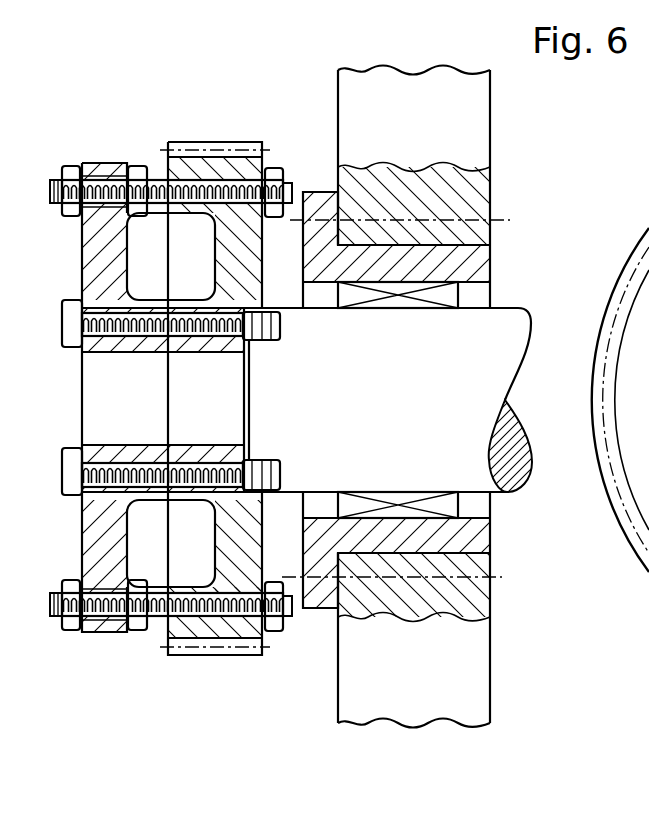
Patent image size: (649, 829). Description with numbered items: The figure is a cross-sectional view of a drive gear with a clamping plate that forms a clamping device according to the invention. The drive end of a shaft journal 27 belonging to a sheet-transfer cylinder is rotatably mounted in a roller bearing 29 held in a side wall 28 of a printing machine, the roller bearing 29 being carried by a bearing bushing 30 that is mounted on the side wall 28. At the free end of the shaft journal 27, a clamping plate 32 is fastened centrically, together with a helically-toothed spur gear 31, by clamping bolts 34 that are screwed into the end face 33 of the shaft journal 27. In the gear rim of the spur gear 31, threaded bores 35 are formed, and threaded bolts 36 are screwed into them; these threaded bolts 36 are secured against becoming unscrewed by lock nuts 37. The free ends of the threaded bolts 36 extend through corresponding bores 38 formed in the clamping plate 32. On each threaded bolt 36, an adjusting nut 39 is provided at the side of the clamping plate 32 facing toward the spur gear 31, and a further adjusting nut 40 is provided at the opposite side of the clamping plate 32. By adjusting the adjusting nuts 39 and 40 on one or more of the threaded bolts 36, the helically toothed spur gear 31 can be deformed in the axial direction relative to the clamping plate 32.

The shaft journal 27 is at (493, 340).
The side wall 28 is at (473, 638).
The roller bearing 29 is at (462, 292).
The bearing bushing 30 is at (418, 253).
The helically-toothed spur gear 31 is at (203, 160).
The clamping plate 32 is at (93, 163).
The end face 33 is at (250, 384).
The clamping bolts 34 is at (70, 345).
The threaded bores 35 is at (228, 180).
The threaded bolts 36 is at (158, 204).
The lock nuts 37 is at (279, 167).
The bores 38 is at (108, 165).
The adjusting nut 39 is at (136, 165).
The adjusting nut 40 is at (70, 213).